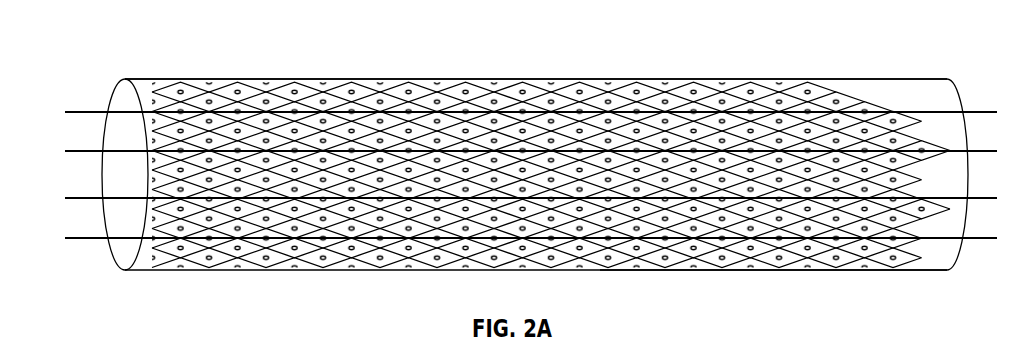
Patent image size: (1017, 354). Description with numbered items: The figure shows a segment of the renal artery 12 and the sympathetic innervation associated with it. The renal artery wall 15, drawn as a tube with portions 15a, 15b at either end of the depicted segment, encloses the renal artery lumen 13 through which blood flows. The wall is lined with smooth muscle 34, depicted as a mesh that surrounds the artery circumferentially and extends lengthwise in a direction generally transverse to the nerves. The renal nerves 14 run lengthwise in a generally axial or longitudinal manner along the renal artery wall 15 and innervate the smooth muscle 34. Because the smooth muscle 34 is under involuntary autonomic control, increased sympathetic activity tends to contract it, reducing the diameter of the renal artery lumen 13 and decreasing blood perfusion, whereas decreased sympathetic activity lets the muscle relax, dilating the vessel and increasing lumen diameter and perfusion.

The renal artery 12 is at (882, 78).
The renal artery lumen 13 is at (130, 225).
The renal nerves 14 is at (85, 151).
The renal artery wall 15 is at (214, 78).
The first end of tubular member 15a is at (128, 91).
The second end of tubular member 15b is at (757, 271).
The smooth muscle 34 is at (683, 98).